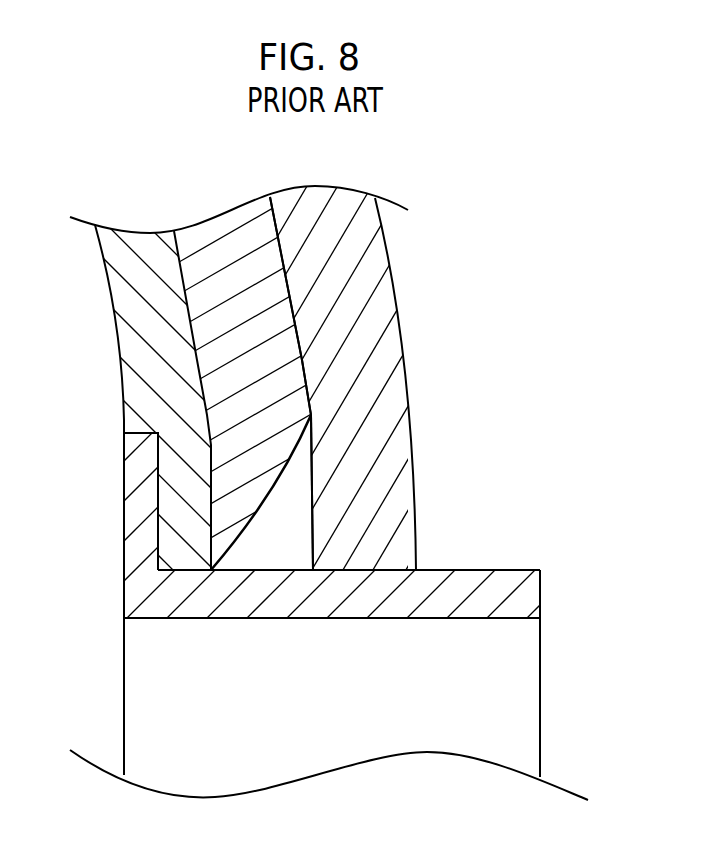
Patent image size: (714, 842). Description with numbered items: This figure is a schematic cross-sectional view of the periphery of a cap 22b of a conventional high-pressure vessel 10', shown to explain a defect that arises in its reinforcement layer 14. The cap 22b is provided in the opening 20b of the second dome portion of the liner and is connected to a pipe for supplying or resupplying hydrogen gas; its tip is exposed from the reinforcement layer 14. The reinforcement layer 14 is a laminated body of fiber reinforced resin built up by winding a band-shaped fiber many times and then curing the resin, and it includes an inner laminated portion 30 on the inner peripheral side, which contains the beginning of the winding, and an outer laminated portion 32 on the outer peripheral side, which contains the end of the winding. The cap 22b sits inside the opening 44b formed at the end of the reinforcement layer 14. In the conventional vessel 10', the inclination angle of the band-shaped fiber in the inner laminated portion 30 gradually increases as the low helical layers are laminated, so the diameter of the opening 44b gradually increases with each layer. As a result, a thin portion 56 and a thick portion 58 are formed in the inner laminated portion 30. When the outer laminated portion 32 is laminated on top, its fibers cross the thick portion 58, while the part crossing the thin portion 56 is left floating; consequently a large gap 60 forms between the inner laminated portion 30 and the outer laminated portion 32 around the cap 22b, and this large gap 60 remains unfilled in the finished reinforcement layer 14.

The conventional high-pressure vessel 10' is at (320, 461).
The reinforcement layer 14 is at (397, 280).
The inner laminated portion 30 is at (242, 247).
The outer laminated portion 32 is at (315, 203).
The thick portion 58 is at (312, 413).
The large gap 60 is at (288, 493).
The cap 22b is at (498, 583).
The opening 20b is at (187, 571).
The opening 44b is at (337, 570).
The thin portion 56 is at (213, 571).